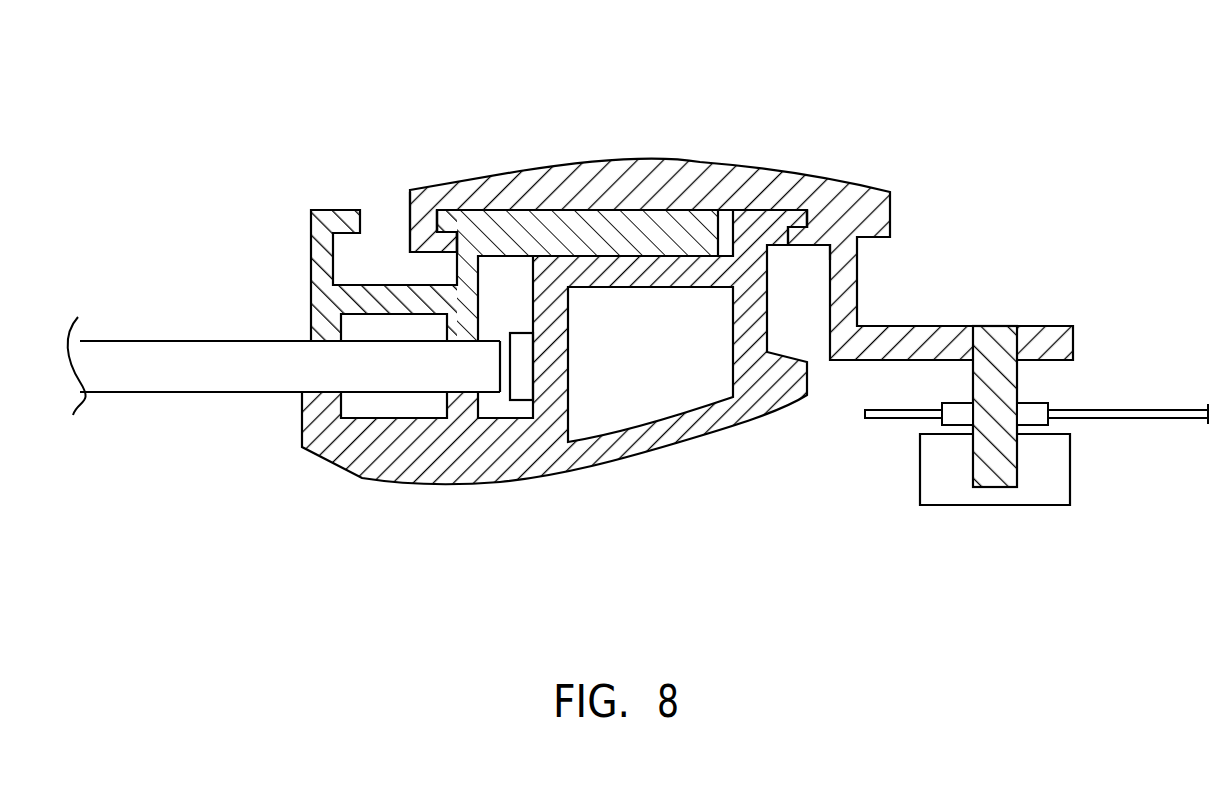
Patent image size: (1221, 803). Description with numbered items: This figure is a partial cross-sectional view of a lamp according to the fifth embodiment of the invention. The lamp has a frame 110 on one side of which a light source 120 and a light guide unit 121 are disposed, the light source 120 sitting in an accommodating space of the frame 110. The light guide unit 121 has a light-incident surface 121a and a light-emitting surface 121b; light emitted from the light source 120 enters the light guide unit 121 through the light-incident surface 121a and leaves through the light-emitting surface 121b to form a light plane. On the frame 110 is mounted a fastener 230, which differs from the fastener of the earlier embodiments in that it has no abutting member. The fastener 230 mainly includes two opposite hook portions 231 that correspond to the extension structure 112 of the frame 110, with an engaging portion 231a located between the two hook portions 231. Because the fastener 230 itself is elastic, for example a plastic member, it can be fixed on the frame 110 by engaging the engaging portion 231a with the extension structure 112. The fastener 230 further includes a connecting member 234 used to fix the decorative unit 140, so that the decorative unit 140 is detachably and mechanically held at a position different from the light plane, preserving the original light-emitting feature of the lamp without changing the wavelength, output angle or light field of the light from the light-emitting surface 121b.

The frame 110 is at (376, 462).
The extension structure 112 is at (452, 222).
The light source 120 is at (522, 385).
The light guide unit 121 is at (175, 375).
The light-incident surface 121a is at (500, 368).
The light-emitting surface 121b is at (255, 393).
The decorative unit 140 is at (1143, 418).
The fastener 230 is at (653, 152).
The hook portion 231 is at (423, 239).
The engaging portion 231a is at (443, 236).
The connecting member 234 is at (1043, 387).